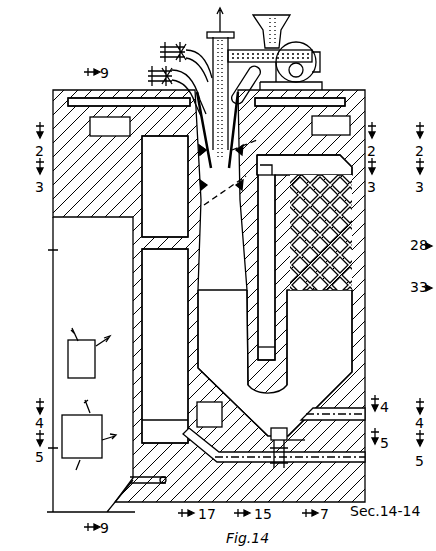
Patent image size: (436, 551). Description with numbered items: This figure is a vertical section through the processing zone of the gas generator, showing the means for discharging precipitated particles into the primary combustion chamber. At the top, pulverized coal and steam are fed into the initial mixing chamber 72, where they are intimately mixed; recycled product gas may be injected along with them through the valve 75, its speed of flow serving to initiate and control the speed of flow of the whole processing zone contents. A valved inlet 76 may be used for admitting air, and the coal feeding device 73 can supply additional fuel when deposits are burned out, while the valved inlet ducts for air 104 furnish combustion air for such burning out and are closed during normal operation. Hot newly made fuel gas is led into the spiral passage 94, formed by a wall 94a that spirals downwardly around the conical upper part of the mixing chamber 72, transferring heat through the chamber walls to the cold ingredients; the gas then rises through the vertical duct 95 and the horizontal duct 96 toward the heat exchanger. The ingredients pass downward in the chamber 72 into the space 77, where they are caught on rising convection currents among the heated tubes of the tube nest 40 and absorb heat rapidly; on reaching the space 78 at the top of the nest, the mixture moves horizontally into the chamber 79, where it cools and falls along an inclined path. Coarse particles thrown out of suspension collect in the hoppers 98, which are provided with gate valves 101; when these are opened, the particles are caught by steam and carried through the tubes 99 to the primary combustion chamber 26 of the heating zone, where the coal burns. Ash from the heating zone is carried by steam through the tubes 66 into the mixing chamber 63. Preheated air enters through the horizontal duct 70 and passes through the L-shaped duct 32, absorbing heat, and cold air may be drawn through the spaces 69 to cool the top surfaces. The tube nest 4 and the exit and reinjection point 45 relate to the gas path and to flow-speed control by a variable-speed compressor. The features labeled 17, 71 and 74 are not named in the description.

The furnace body wall 17 is at (209, 296).
The primary combustion chamber 26 is at (165, 346).
The L-shaped duct 32 is at (209, 414).
The tube nest 40 is at (330, 300).
The exit and reinjection point 45 is at (89, 435).
The mixing chamber 63 is at (91, 364).
The tube 66 is at (124, 484).
The space 69 is at (75, 100).
The horizontal duct 70 is at (331, 125).
The block 71 is at (89, 353).
The initial mixing chamber 72 is at (233, 363).
The coal feeding device 73 is at (314, 50).
The fuel pipe 74 is at (223, 30).
The valve 75 is at (176, 34).
The valved inlet 76 is at (185, 62).
The space 77 is at (319, 363).
The space 78 is at (265, 176).
The chamber 79 is at (270, 294).
The spiral passage 94 is at (252, 156).
The wall 94a is at (204, 190).
The vertical duct 95 is at (165, 186).
The horizontal duct 96 is at (110, 126).
The hopper 98 is at (302, 416).
The tube 99 is at (274, 445).
The gate valve 101 is at (300, 440).
The valved inlet duct for air 104 is at (244, 108).
The tube nest 4 is at (333, 414).